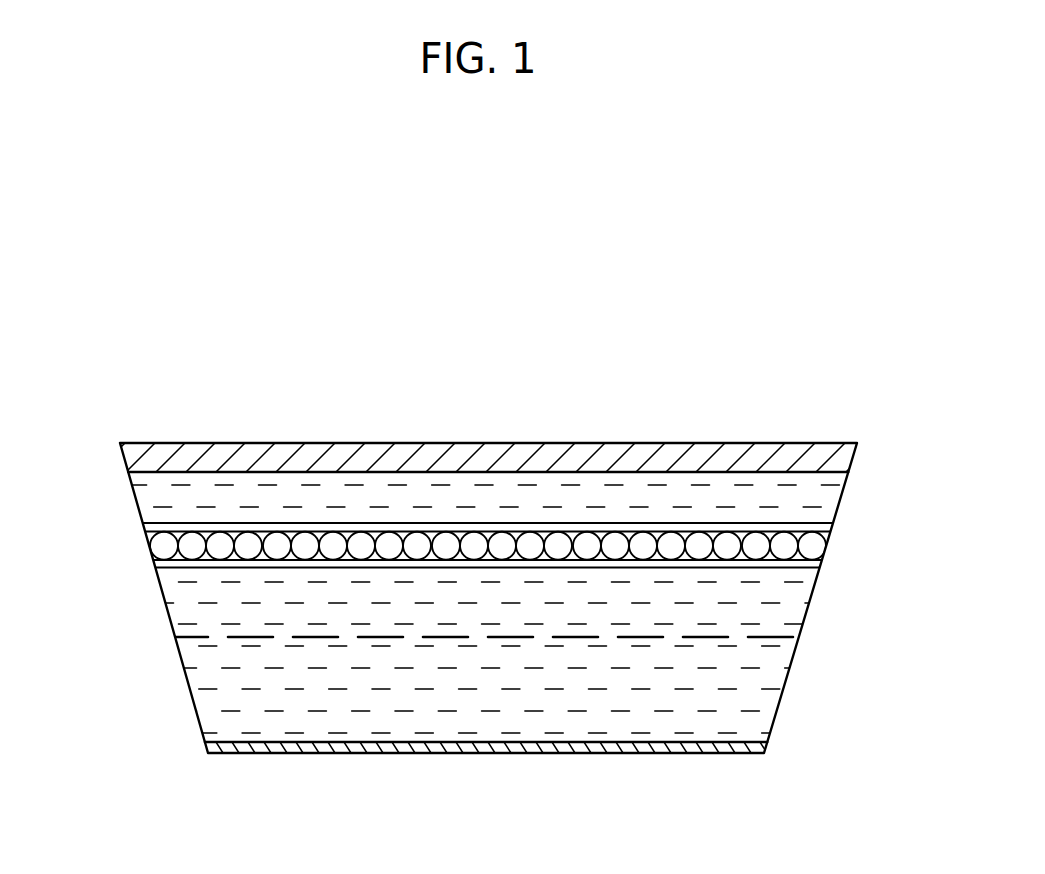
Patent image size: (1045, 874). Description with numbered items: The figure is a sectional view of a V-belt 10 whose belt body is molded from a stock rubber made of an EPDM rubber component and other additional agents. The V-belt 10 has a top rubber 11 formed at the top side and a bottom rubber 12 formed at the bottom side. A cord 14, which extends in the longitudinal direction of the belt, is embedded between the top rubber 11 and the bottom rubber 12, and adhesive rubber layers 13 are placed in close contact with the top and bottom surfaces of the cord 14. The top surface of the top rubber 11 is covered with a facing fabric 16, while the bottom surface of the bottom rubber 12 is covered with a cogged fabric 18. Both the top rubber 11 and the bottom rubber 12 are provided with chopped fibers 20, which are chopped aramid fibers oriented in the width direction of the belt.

The V-belt 10 is at (612, 397).
The top rubber 11 is at (842, 500).
The bottom rubber 12 is at (806, 613).
The adhesive rubber layers 13 is at (145, 528).
The cord 14 is at (829, 537).
The facing fabric 16 is at (497, 458).
The cogged fabric 18 is at (723, 754).
The chopped fibers 20 is at (362, 485).